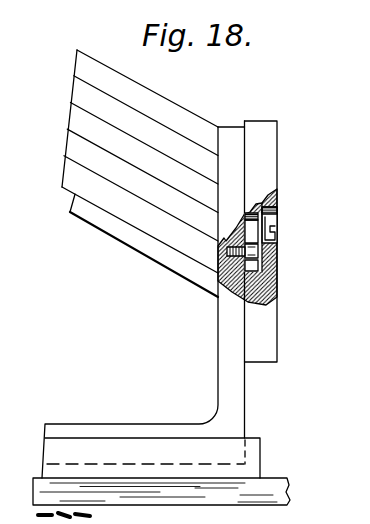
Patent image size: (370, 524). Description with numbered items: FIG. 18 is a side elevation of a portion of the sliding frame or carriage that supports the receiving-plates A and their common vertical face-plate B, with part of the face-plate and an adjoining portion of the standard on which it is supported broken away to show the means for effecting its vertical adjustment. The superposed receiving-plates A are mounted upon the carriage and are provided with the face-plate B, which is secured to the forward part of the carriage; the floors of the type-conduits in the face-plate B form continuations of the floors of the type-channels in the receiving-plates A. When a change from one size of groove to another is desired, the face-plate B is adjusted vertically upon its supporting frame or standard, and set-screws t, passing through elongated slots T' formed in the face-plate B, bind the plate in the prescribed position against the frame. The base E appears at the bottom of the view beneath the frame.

The receiving-plates A is at (140, 173).
The face-plate B is at (280, 156).
The elongated slots T' is at (151, 302).
The set-screws t is at (288, 246).
The base plate E is at (161, 492).